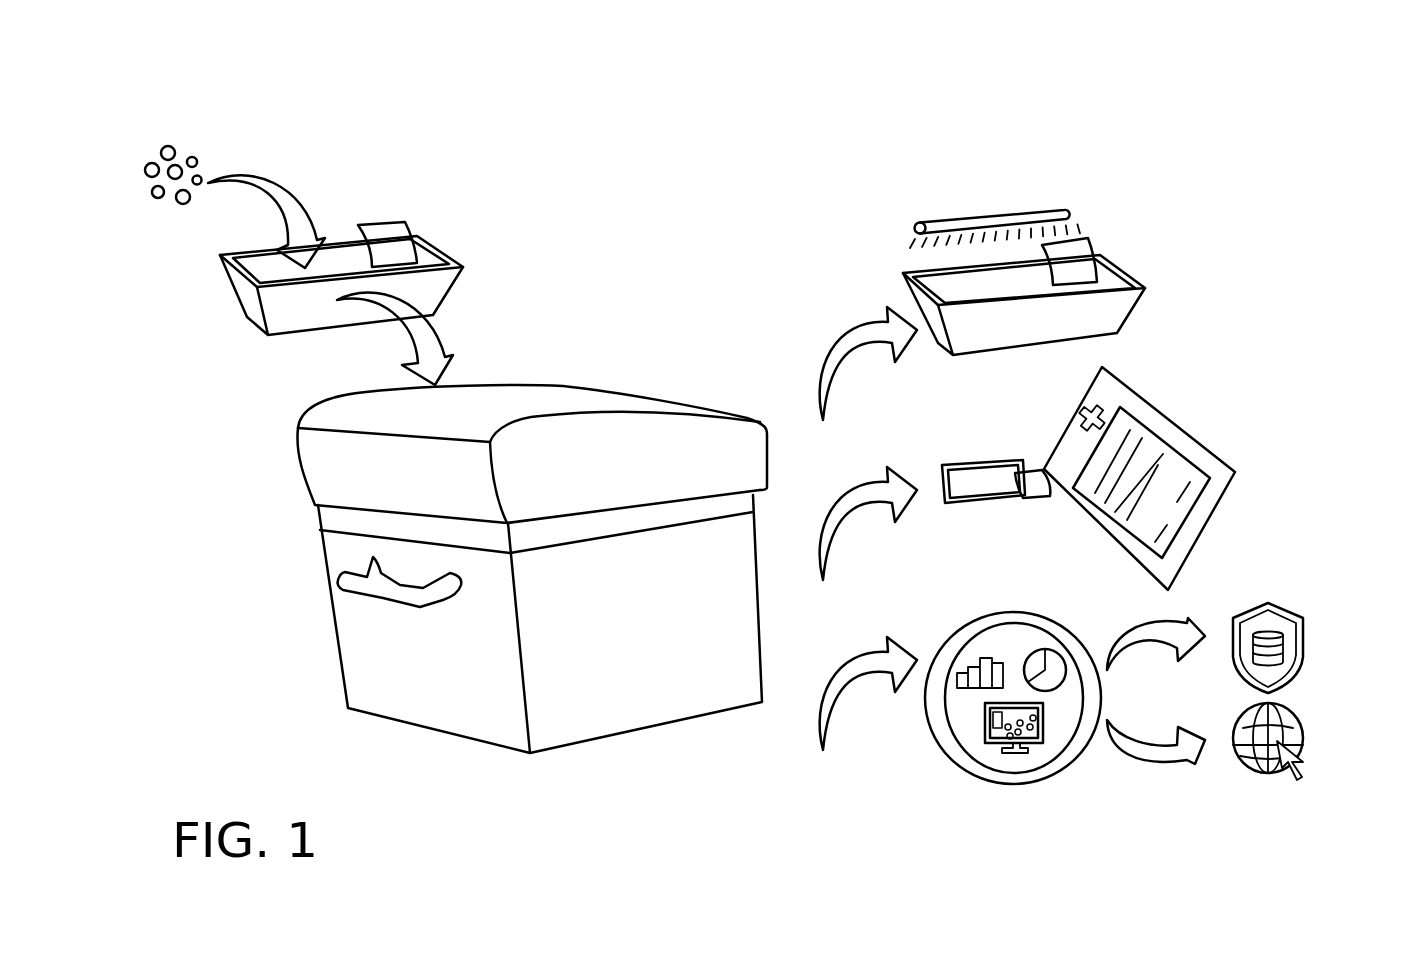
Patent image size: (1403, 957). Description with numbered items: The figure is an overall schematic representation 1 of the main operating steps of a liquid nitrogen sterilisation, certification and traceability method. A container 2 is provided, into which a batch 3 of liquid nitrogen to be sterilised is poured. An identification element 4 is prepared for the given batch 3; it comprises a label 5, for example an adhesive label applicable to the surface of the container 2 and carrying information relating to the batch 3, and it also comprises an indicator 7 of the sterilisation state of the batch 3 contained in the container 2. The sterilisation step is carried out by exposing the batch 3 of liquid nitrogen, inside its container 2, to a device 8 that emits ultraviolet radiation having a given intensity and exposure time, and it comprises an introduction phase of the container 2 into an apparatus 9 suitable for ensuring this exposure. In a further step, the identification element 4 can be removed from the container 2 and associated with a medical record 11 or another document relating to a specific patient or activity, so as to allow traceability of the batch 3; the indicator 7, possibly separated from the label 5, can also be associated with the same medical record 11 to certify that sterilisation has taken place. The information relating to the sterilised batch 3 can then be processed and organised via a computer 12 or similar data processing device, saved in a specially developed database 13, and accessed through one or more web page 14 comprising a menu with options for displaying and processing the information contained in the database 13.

The overall schematic representation 1 is at (1143, 177).
The container 2 is at (277, 327).
The batch 3 is at (160, 202).
The identification element 4 is at (975, 489).
The label 5 is at (978, 462).
The indicator 7 is at (402, 233).
The device 8 is at (980, 220).
The apparatus 9 is at (638, 716).
The medical record 11 is at (1177, 415).
The computer 12 is at (1033, 737).
The database 13 is at (1292, 643).
The web page 14 is at (1298, 735).